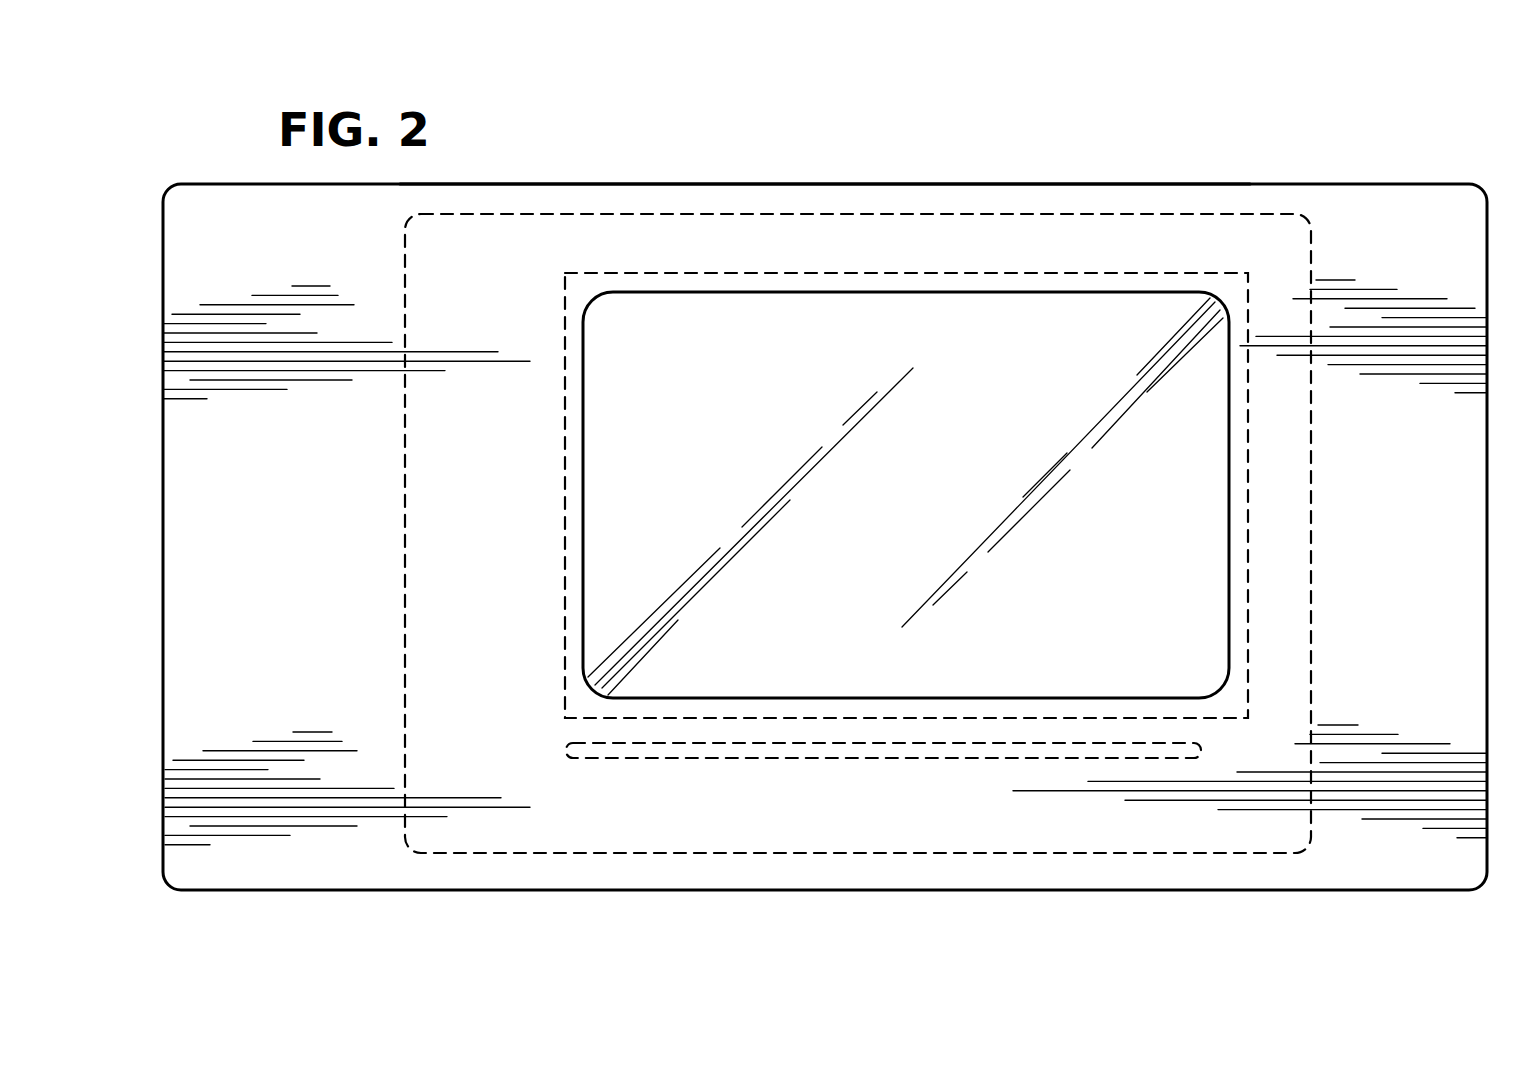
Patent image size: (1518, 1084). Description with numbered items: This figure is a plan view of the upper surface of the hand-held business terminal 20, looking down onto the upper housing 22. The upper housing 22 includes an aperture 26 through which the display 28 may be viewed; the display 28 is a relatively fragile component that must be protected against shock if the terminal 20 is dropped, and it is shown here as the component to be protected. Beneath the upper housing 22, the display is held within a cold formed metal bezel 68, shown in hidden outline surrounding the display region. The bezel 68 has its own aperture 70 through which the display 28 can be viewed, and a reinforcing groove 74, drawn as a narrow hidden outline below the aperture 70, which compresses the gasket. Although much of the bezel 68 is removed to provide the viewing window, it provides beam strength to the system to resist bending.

The hand-held business terminal 20 is at (1262, 147).
The upper housing 22 is at (776, 183).
The aperture 26 is at (583, 432).
The display 28 is at (632, 531).
The bezel 68 is at (405, 535).
The aperture 70 is at (565, 648).
The reinforcing groove 74 is at (745, 758).